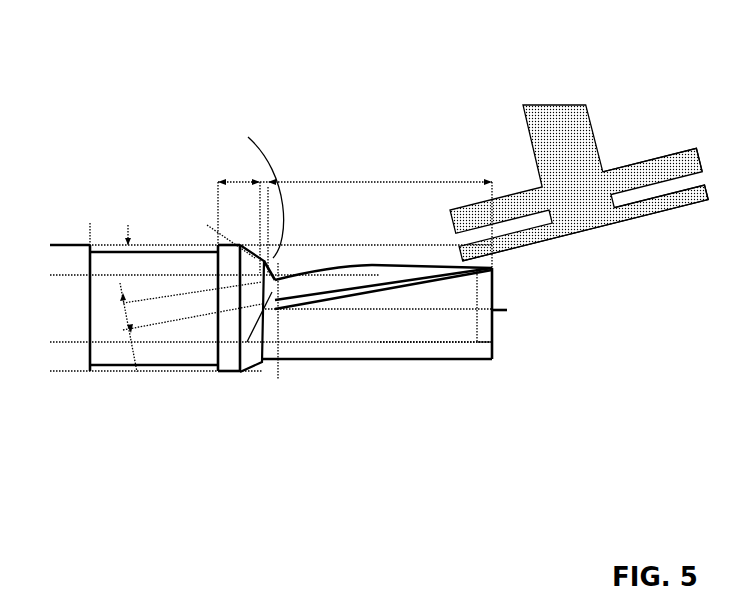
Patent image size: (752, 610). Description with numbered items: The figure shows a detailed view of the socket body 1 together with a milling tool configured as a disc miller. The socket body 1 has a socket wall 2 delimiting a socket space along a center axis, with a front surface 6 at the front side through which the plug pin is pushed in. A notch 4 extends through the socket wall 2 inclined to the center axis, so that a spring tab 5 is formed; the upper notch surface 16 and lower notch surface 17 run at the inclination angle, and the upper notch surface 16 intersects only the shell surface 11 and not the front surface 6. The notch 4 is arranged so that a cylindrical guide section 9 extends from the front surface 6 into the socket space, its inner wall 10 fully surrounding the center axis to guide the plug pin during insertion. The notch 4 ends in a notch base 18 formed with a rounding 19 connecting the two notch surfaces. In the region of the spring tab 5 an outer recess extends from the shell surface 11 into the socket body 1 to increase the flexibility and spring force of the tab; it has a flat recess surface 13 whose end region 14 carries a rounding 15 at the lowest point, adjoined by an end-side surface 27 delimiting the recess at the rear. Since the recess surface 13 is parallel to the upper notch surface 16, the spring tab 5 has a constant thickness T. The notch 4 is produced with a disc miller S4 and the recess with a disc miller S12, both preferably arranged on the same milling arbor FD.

The socket body 1 is at (375, 342).
The socket wall 2 is at (412, 327).
The notch 4 is at (292, 345).
The spring tab 5 is at (383, 256).
The front surface 6 is at (492, 270).
The guide section 9 is at (442, 327).
The inner wall 10 is at (314, 325).
The shell surface 11 is at (403, 253).
The recess surface 13 is at (305, 257).
The end region 14 is at (285, 270).
The rounding 15 is at (260, 185).
The upper notch surface 16 is at (335, 276).
The lower notch surface 17 is at (355, 282).
The notch base 18 is at (240, 372).
The rounding 19 is at (271, 363).
The end-side surface 27 is at (268, 263).
The thickness T is at (123, 293).
The milling arbor FD is at (562, 105).
The disc miller S12 is at (690, 150).
The disc miller S4 is at (690, 188).